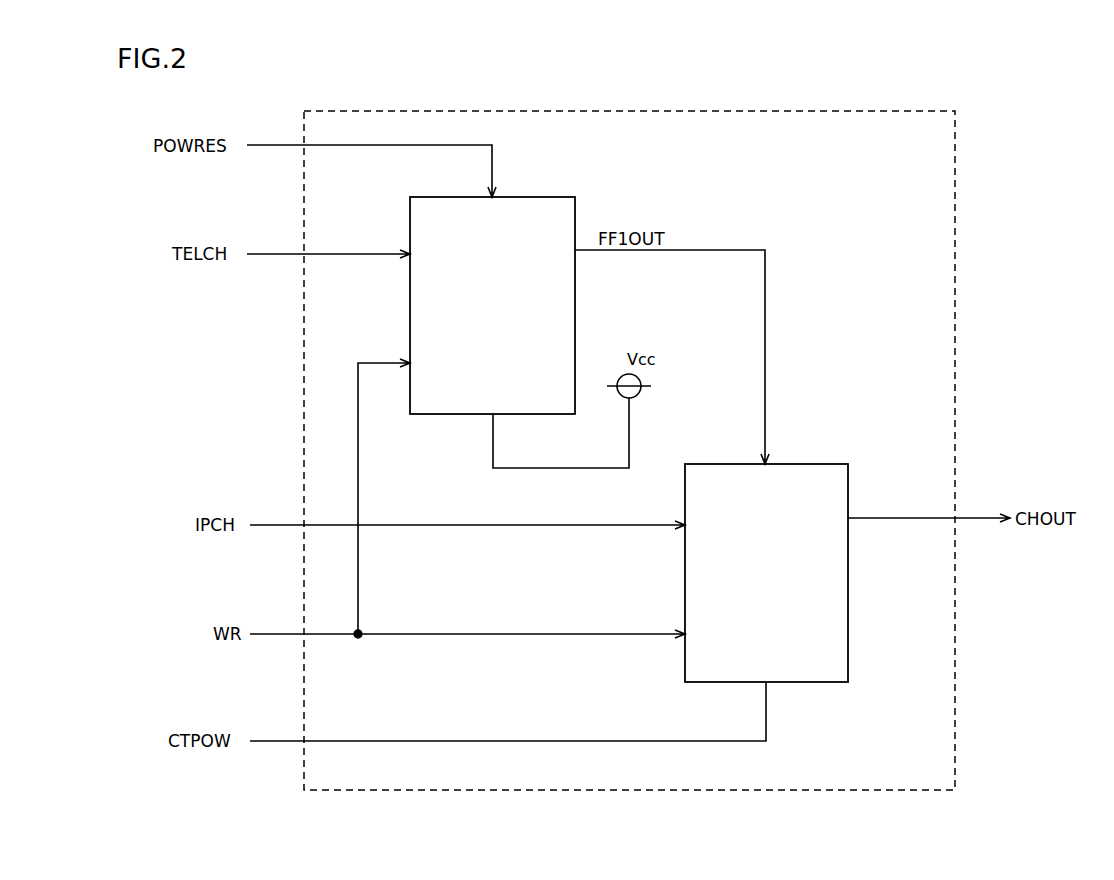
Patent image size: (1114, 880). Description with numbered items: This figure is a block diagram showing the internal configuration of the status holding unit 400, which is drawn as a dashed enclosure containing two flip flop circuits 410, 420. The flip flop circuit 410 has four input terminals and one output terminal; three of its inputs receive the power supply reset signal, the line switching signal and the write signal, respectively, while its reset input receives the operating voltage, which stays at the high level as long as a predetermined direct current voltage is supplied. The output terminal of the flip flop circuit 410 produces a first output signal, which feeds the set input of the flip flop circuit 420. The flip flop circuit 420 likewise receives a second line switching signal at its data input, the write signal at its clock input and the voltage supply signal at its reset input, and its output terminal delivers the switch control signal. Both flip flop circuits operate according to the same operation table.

The status holding unit 400 is at (945, 111).
The flip flop circuit 410 is at (565, 197).
The flip flop circuit 420 is at (838, 464).